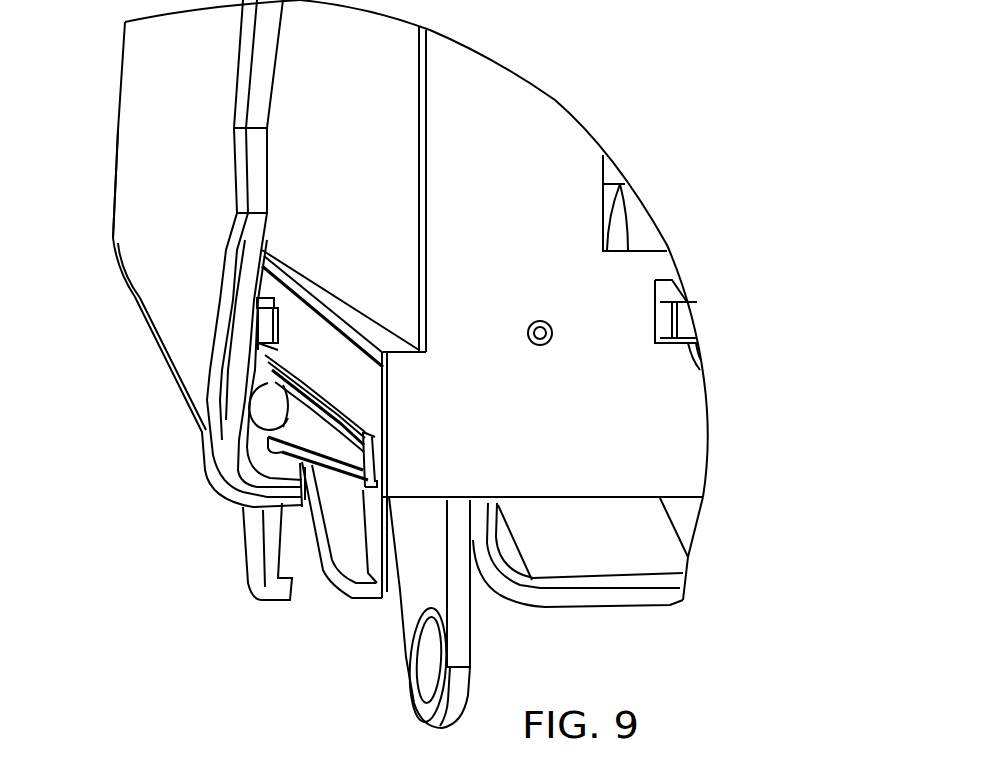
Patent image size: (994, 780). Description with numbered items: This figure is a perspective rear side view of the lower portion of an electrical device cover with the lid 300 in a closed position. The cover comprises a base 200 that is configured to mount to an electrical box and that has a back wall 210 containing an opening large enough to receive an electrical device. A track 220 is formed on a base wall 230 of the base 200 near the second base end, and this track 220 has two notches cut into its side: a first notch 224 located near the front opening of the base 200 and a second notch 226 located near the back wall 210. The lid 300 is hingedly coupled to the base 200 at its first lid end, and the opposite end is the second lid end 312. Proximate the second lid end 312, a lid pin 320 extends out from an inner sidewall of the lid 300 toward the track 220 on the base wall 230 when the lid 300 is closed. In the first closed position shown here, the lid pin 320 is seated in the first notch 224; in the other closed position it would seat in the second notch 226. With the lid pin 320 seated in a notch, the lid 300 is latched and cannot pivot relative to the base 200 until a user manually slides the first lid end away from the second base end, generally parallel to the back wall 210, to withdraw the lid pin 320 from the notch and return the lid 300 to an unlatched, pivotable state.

The base 200 is at (430, 180).
The back wall 210 is at (617, 422).
The track 220 is at (255, 378).
The first notch 224 is at (267, 375).
The second notch 226 is at (387, 465).
The base wall 230 is at (367, 108).
The lid 300 is at (123, 73).
The second lid end 312 is at (175, 151).
The lid pin 320 is at (262, 337).